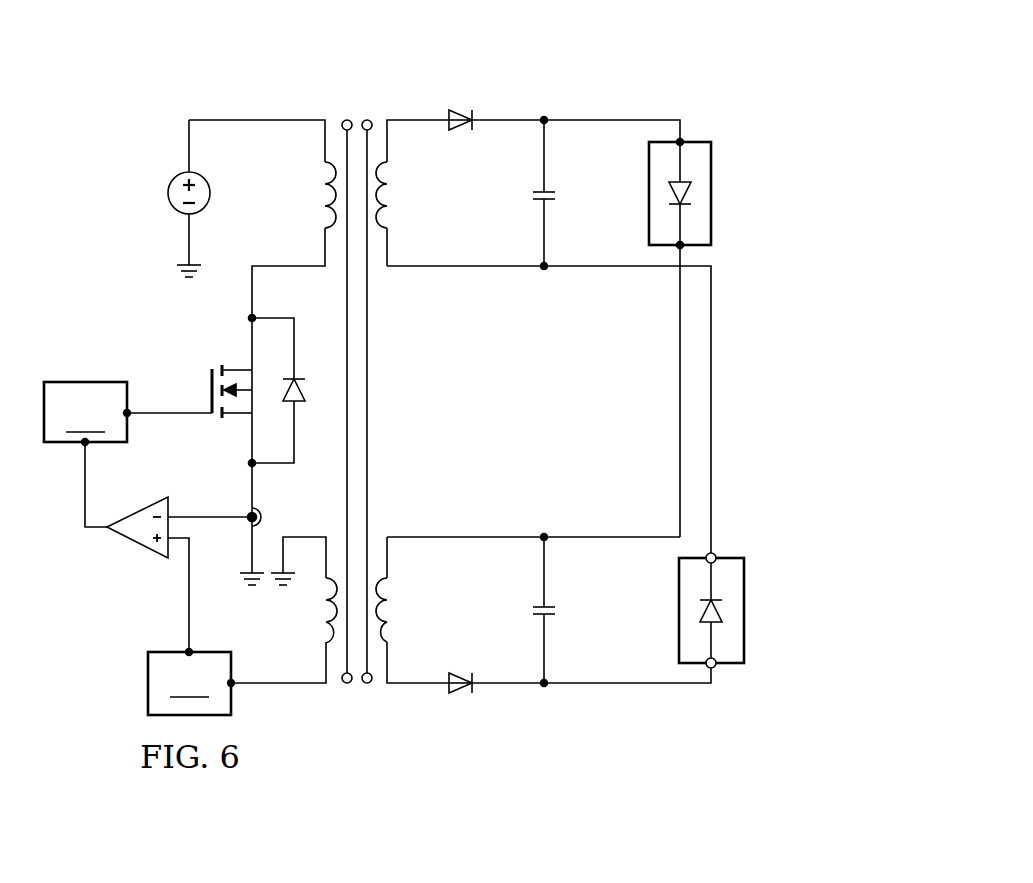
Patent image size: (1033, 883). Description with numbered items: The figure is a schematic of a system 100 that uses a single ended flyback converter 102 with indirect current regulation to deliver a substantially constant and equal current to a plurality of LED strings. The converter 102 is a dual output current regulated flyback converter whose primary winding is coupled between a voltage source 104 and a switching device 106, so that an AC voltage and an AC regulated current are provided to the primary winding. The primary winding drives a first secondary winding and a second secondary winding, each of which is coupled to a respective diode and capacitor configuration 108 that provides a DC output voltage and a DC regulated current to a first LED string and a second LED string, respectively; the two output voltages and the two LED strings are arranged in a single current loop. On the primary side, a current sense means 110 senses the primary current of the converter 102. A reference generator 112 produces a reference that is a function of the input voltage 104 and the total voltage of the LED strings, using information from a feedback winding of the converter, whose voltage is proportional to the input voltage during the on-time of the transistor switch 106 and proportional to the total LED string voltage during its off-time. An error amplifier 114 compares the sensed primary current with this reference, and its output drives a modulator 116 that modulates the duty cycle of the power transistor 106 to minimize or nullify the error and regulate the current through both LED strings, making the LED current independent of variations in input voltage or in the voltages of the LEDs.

The system 100 is at (655, 70).
The single ended flyback converter 102 is at (104, 95).
The voltage source 104 is at (156, 169).
The switching device 106 is at (190, 358).
The diode and capacitor configuration 108 is at (519, 188).
The current sense means 110 is at (247, 523).
The reference generator 112 is at (242, 626).
The error amplifier 114 is at (136, 546).
The modulator 116 is at (87, 454).